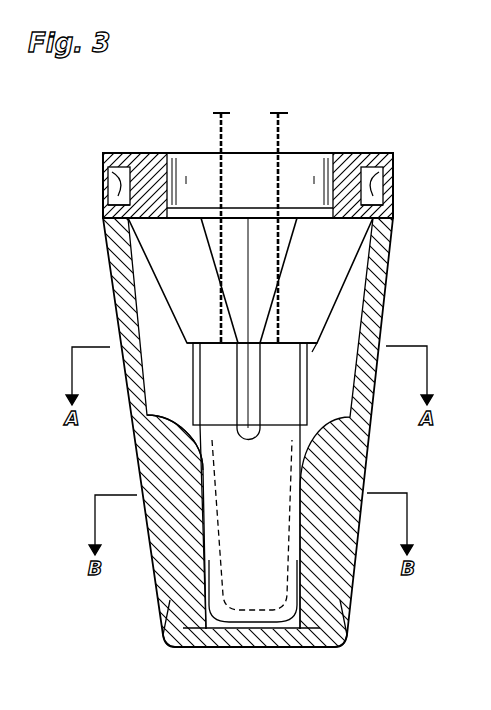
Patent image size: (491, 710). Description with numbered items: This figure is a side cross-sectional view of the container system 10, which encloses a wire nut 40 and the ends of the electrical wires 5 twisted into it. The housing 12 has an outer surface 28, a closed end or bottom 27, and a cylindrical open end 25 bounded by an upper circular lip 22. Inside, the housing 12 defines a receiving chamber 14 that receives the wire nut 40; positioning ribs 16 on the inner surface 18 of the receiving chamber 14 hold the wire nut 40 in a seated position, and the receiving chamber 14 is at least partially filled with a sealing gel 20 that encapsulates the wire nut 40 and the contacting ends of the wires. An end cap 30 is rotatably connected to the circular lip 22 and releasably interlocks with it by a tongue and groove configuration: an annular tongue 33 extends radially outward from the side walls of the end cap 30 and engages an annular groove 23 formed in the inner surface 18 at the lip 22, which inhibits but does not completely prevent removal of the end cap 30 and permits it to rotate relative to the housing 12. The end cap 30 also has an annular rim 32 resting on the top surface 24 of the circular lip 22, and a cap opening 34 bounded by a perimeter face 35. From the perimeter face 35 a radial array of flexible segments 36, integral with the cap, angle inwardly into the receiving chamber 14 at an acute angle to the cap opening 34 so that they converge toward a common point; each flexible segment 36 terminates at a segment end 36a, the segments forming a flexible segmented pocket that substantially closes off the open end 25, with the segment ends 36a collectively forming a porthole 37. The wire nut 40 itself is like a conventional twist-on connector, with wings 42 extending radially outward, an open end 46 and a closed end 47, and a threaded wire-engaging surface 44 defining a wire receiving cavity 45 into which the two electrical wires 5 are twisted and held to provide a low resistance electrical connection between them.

The electrical leads 5 is at (274, 118).
The container system 10 is at (347, 51).
The housing 12 is at (382, 328).
The receiving chamber 14 is at (355, 285).
The positioning ribs 16 is at (168, 418).
The inner surface 18 is at (143, 290).
The sealing gel 20 is at (157, 322).
The circular lip 22 is at (110, 183).
The annular groove 23 is at (130, 156).
The top surface 24 is at (108, 166).
The open end 25 is at (122, 209).
The closed end 27 is at (232, 648).
The outer surface 28 is at (162, 578).
The end cap 30 is at (160, 155).
The annular rim 32 is at (108, 155).
The annular tongue 33 is at (145, 155).
The cap opening 34 is at (240, 180).
The perimeter face 35 is at (178, 186).
The flexible segments 36 is at (173, 273).
The segment end 36a is at (250, 362).
The porthole 37 is at (246, 335).
The wire nut 40 is at (313, 418).
The wings 42 is at (246, 443).
The wire-engaging surface 44 is at (222, 590).
The wire receiving cavity 45 is at (294, 338).
The open end 46 is at (320, 345).
The closed end 47 is at (283, 648).